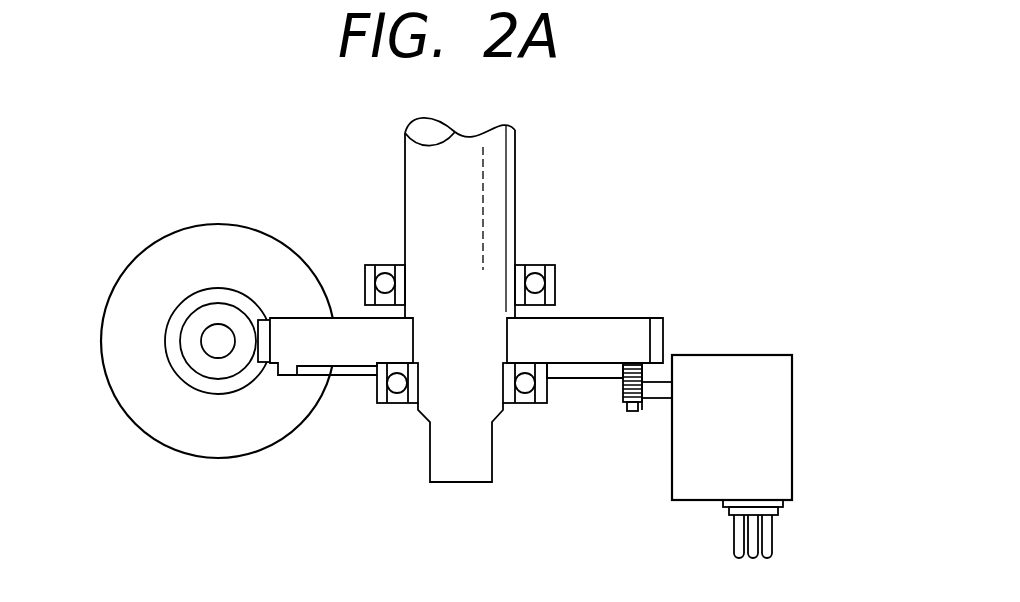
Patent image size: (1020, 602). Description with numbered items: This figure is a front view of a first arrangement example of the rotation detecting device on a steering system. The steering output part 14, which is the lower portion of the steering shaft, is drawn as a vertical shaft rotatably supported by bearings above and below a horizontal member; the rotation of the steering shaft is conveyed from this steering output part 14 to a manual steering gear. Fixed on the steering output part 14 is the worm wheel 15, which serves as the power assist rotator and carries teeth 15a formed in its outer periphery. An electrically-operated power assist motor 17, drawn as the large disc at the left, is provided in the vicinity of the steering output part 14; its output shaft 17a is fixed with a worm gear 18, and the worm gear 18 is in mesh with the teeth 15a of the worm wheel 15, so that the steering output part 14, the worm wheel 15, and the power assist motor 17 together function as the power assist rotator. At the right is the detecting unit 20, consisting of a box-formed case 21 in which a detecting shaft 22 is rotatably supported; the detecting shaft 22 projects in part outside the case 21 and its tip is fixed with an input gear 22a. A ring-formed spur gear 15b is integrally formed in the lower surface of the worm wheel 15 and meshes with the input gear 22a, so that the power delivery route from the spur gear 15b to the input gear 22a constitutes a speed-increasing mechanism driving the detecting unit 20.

The steering output part 14 is at (502, 189).
The worm wheel 15 is at (620, 330).
The teeth 15a is at (660, 335).
The spur gear 15b is at (288, 366).
The power assist motor 17 is at (217, 243).
The output shaft 17a is at (218, 343).
The worm gear 18 is at (229, 372).
The detecting unit 20 is at (776, 456).
The case 21 is at (773, 383).
The detecting shaft 22 is at (660, 390).
The input gear 22a is at (632, 413).